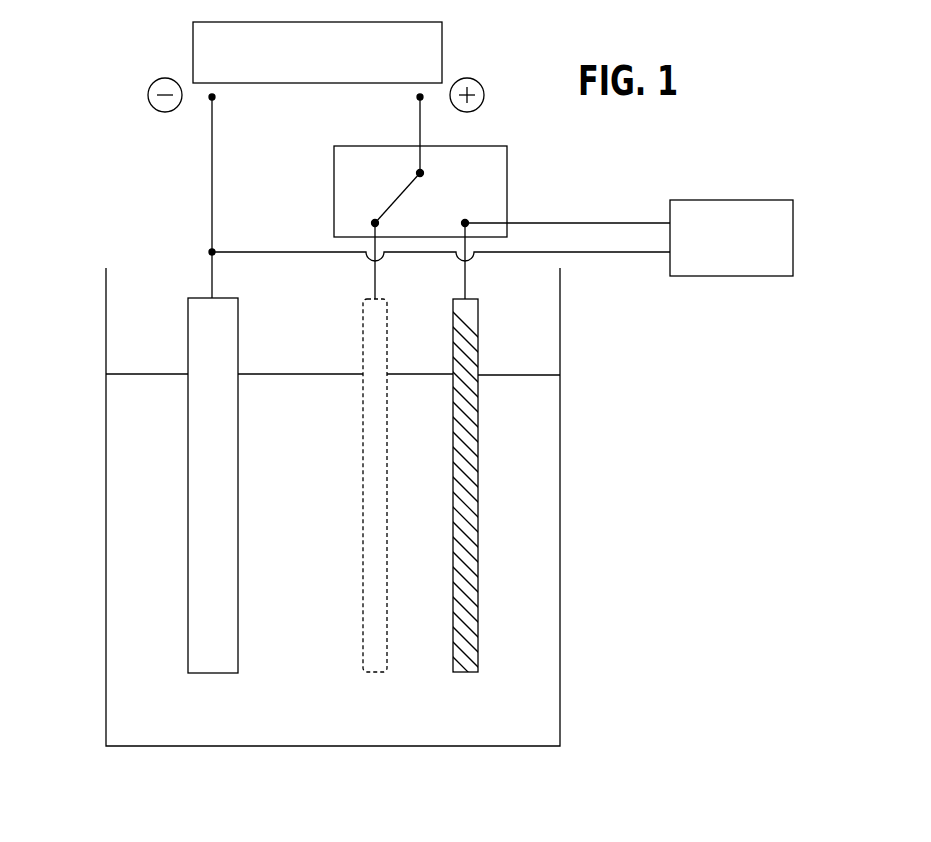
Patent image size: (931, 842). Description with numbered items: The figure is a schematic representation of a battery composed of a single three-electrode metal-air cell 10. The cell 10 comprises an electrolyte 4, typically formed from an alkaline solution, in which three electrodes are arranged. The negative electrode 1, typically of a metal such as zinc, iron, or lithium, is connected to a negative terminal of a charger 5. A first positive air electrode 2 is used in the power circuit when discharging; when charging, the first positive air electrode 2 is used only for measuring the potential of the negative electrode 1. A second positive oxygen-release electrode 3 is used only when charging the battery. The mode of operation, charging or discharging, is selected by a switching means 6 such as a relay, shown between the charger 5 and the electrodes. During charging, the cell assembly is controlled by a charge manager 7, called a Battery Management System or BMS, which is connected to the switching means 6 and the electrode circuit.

The negative electrode 1 is at (200, 607).
The first positive air electrode 2 is at (473, 560).
The second positive oxygen-release electrode 3 is at (375, 672).
The electrolyte 4 is at (169, 723).
The charger 5 is at (193, 41).
The switching means 6 is at (417, 195).
The charge manager 7 is at (772, 200).
The metal-air cell 10 is at (580, 432).